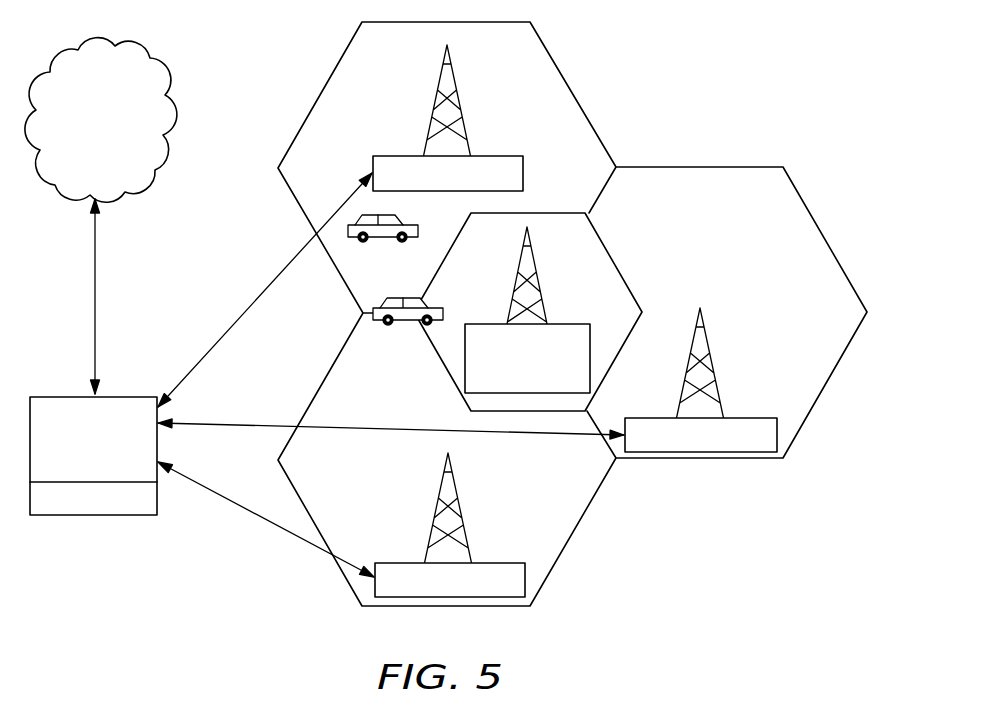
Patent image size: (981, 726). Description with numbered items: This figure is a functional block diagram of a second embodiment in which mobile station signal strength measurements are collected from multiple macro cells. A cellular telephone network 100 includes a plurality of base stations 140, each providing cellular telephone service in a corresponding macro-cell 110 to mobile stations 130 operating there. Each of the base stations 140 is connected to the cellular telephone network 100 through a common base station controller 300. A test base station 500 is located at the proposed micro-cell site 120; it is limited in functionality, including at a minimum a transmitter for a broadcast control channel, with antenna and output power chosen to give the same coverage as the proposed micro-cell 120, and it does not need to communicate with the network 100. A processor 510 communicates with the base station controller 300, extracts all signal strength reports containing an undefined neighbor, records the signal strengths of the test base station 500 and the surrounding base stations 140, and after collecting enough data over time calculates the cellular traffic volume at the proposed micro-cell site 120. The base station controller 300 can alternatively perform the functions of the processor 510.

The cellular telephone network 100 is at (145, 72).
The macro-cell 110 is at (545, 62).
The micro-cell 120 is at (598, 225).
The mobile station 130 is at (376, 240).
The base station 140 is at (498, 155).
The base station controller 300 is at (127, 410).
The test base station 500 is at (467, 373).
The processor 510 is at (157, 496).